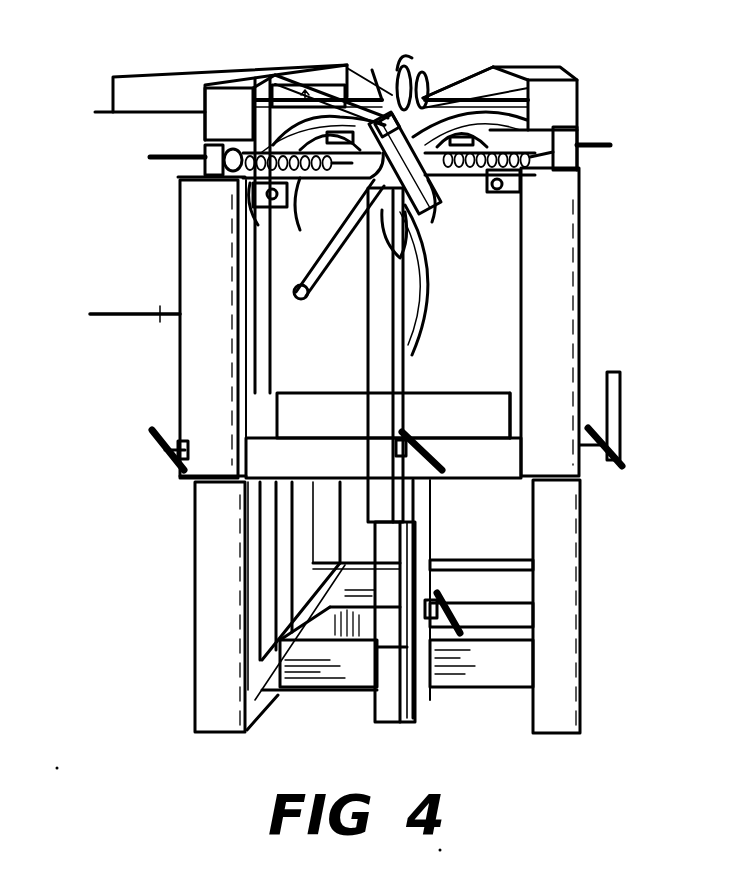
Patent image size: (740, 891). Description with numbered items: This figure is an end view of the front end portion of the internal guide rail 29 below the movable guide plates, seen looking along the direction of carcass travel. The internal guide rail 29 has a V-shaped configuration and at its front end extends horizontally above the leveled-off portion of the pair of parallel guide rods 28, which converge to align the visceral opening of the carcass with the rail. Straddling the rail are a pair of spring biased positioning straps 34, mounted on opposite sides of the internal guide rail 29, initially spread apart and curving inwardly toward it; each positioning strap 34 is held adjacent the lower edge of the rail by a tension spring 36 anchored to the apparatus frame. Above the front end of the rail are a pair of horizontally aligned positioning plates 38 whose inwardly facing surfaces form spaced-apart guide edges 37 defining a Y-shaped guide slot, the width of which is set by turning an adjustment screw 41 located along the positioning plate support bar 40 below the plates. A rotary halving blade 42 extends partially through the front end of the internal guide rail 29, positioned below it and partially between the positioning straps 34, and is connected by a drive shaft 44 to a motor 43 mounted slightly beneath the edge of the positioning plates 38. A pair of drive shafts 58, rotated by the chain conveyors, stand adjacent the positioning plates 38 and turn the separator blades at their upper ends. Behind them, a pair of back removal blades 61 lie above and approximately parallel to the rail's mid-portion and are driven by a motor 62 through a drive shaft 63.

The guide rods 28 is at (306, 296).
The internal guide rail 29 is at (330, 85).
The positioning straps 34 is at (355, 172).
The tension spring 36 is at (292, 192).
The guide edges 37 is at (290, 124).
The positioning plates 38 is at (262, 78).
The positioning plate support bar 40 is at (570, 300).
The adjustment screw 41 is at (612, 372).
The rotary halving blade 42 is at (412, 313).
The motor 43 is at (168, 318).
The drive shaft 44 is at (290, 287).
The drive shafts 58 is at (256, 143).
The back removal blades 61 is at (422, 72).
The motor 62 is at (225, 85).
The drive shaft 63 is at (388, 100).